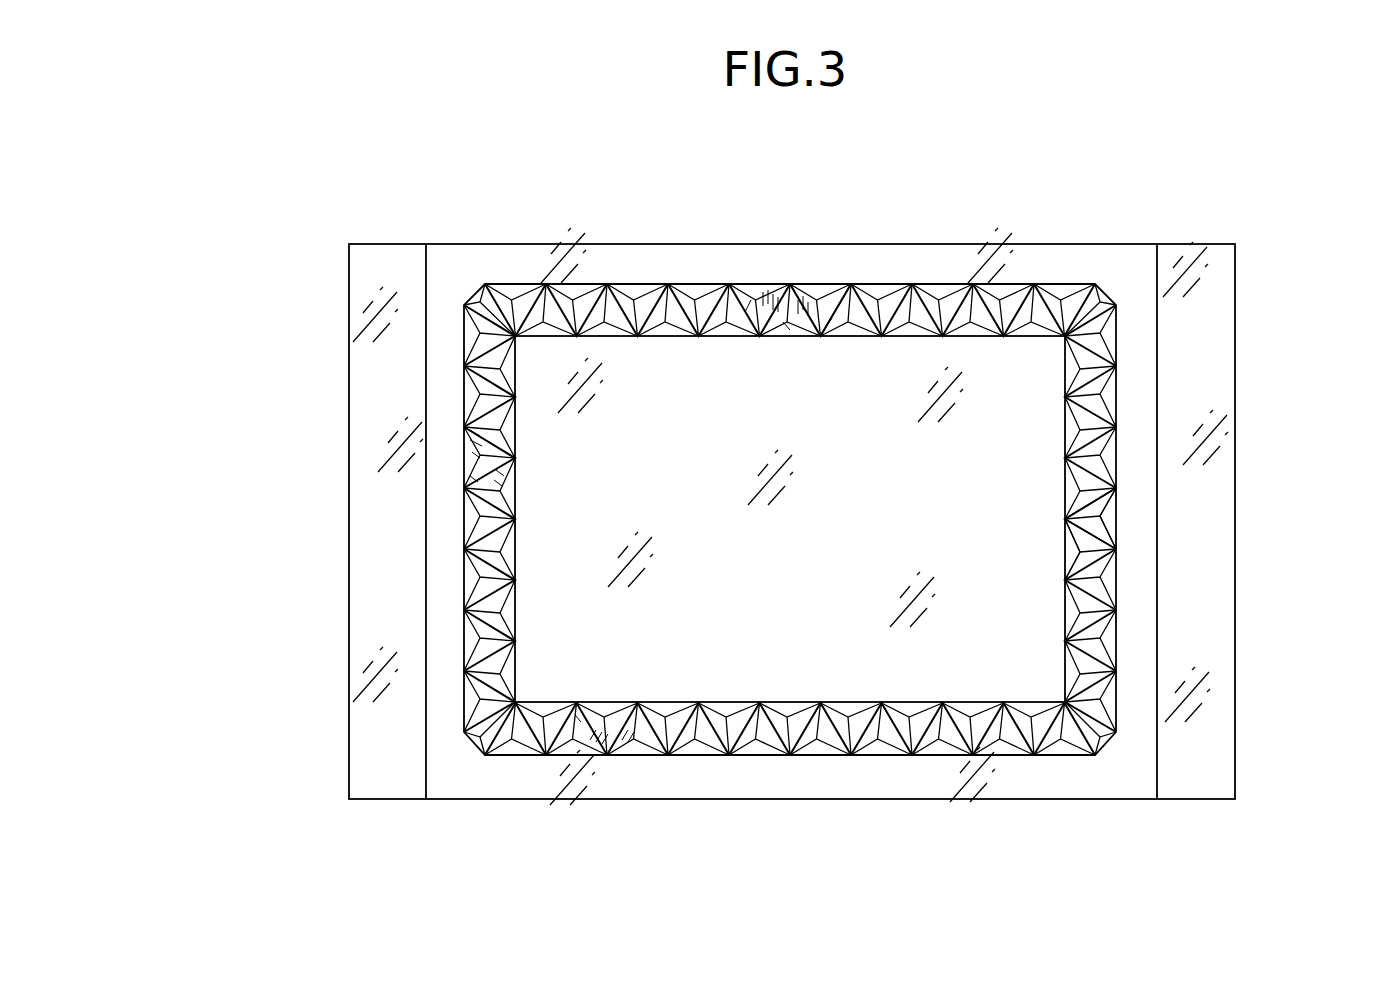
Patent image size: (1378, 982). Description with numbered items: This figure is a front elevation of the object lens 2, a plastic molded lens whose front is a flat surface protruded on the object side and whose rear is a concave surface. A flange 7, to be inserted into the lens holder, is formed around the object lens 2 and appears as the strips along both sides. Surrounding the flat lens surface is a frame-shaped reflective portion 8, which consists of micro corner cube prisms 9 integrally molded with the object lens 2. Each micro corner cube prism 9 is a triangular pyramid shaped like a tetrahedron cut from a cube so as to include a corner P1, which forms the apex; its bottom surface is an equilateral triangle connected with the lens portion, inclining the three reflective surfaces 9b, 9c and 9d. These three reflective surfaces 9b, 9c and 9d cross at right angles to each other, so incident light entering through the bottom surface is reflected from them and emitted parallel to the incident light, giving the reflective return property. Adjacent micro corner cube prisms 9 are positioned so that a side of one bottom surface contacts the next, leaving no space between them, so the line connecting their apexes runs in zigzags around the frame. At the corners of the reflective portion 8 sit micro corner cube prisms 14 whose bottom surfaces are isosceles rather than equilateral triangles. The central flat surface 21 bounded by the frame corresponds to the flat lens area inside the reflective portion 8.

The object lens 2 is at (600, 240).
The flange 7 is at (370, 392).
The reflective portion 8 is at (826, 280).
The micro corner cube prism 9 is at (930, 300).
The reflective surface 9b is at (1110, 523).
The reflective surface 9c is at (1097, 512).
The reflective surface 9d is at (1068, 530).
The corner P1 is at (1100, 515).
The micro corner cube prism 14 is at (478, 305).
The flat surface 21 is at (680, 633).